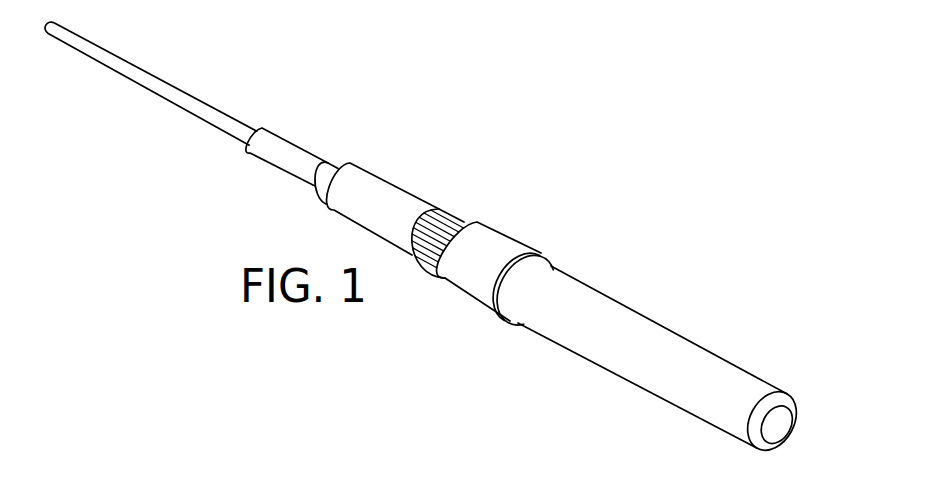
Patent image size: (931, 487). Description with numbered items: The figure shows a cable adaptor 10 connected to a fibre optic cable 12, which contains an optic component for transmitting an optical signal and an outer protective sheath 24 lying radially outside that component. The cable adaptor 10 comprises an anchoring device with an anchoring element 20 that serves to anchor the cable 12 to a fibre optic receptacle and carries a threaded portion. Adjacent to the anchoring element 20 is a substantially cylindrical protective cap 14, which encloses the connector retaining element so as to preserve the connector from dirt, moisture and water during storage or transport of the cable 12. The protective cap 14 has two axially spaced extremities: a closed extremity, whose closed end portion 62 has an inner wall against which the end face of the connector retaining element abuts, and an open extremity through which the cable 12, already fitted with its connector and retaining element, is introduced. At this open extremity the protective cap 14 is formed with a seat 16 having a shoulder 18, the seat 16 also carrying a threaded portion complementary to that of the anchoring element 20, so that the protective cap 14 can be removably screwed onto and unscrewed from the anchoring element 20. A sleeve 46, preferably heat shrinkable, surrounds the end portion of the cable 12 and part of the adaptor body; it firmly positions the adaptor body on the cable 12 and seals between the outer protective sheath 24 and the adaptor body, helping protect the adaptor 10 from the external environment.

The cable adaptor 10 is at (507, 170).
The fibre optic cable 12 is at (168, 64).
The protective cap 14 is at (664, 338).
The seat 16 is at (502, 238).
The shoulder 18 is at (543, 258).
The anchoring element 20 is at (451, 217).
The outer protective sheath 24 is at (221, 118).
The sleeve 46 is at (378, 186).
The closed end portion 62 is at (787, 428).